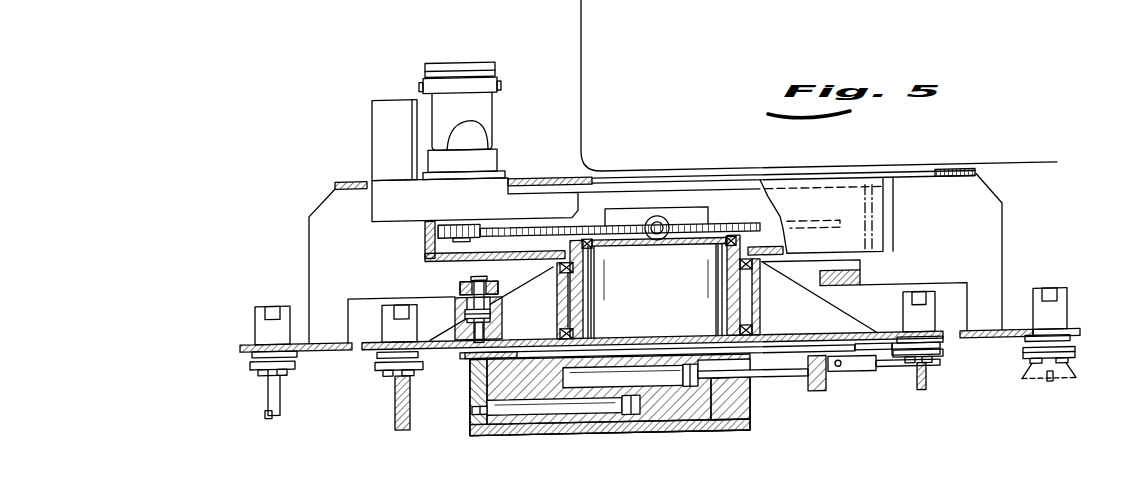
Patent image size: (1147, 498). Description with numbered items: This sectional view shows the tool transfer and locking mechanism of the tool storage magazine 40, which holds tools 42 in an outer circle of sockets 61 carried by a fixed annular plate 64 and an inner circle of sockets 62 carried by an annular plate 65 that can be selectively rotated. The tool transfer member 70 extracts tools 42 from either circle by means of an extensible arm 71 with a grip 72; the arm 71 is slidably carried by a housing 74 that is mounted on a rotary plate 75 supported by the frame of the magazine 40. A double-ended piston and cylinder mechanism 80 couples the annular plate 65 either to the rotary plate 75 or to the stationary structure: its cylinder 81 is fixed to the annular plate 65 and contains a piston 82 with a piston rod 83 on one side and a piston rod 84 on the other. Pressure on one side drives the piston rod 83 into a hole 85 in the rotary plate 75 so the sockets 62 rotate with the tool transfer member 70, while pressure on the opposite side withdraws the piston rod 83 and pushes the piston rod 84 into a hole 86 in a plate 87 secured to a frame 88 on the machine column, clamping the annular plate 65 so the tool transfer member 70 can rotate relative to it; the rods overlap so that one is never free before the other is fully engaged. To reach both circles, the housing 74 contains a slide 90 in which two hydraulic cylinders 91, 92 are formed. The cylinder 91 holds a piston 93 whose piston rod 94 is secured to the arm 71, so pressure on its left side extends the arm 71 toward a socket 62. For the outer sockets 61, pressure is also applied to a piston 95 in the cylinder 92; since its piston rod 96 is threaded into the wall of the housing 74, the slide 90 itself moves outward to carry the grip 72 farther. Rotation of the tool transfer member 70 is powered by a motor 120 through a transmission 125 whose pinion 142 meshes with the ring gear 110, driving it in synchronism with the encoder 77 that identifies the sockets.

The tool storage magazine 40 is at (298, 227).
The tool 42 is at (238, 367).
The outer circle of sockets 61 is at (270, 320).
The inner circle of sockets 62 is at (395, 323).
The annular plate 64 is at (312, 346).
The annular plate 65 is at (362, 344).
The tool transfer member 70 is at (648, 392).
The extensible arm 71 is at (872, 369).
The grip 72 is at (905, 343).
The tool transfer member housing 74 is at (650, 437).
The rotary plate 75 is at (777, 350).
The encoder 77 is at (390, 106).
The double-ended piston and cylinder mechanism 80 is at (507, 310).
The cylinder 81 is at (595, 288).
The piston 82 is at (467, 312).
The piston rod 83 is at (500, 326).
The piston rod 84 is at (460, 287).
The hole 85 is at (477, 351).
The hole 86 is at (480, 279).
The plate 87 is at (487, 280).
The frame 88 is at (979, 215).
The slide 90 is at (752, 408).
The hydraulic cylinder 91 is at (623, 377).
The hydraulic cylinder 92 is at (559, 406).
The piston 93 is at (683, 366).
The piston rod 94 is at (770, 376).
The piston 95 is at (623, 403).
The piston rod 96 is at (518, 403).
The ring gear 110 is at (524, 211).
The motor 120 is at (476, 96).
The transmission 125 is at (357, 172).
The pinion 142 is at (441, 221).